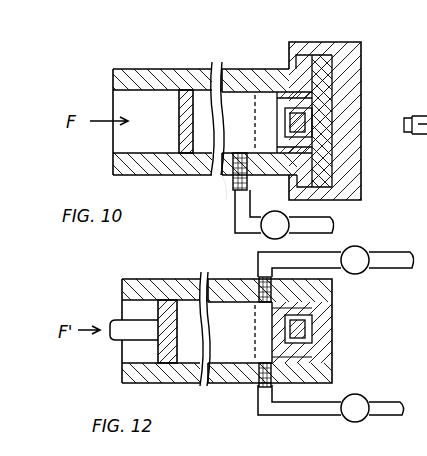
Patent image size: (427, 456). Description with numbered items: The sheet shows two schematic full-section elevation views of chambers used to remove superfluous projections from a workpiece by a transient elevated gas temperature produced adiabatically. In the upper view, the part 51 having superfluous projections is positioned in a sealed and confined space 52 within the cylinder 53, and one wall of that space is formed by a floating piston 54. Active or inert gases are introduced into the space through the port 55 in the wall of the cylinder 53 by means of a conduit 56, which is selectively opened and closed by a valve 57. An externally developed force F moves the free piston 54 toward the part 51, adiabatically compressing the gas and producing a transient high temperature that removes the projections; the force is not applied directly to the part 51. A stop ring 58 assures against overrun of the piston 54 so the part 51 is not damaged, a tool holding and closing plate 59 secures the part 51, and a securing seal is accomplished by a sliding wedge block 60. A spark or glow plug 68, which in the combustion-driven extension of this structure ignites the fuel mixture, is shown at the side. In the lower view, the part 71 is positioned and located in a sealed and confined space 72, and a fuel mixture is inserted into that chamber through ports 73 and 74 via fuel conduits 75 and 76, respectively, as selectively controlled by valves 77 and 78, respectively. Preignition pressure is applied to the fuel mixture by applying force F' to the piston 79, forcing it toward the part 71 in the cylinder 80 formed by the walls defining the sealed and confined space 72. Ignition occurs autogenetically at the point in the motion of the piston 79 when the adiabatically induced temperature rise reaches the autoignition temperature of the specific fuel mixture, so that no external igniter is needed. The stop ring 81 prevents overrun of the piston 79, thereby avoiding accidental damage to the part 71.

In FIG. 10, the part 51 is at (300, 100).
In FIG. 10, the sealed and confined space 52 is at (228, 92).
In FIG. 10, the cylinder 53 is at (207, 176).
In FIG. 10, the floating piston 54 is at (187, 92).
In FIG. 10, the port 55 is at (226, 178).
In FIG. 10, the conduit 56 is at (252, 202).
In FIG. 10, the valve 57 is at (262, 234).
In FIG. 10, the stop ring 58 is at (306, 140).
In FIG. 10, the tool holding and closing plate 59 is at (318, 60).
In FIG. 10, the sliding wedge block 60 is at (358, 184).
In FIG. 10, the spark or glow plug 68 is at (417, 140).
In FIG. 12, the part 71 is at (300, 313).
In FIG. 12, the sealed and confined space 72 is at (216, 340).
In FIG. 12, the port 73 is at (257, 289).
In FIG. 12, the port 74 is at (250, 387).
In FIG. 12, the fuel conduit 75 is at (330, 252).
In FIG. 12, the fuel conduit 76 is at (300, 413).
In FIG. 12, the valve 77 is at (363, 273).
In FIG. 12, the valve 78 is at (361, 421).
In FIG. 12, the piston 79 is at (170, 300).
In FIG. 12, the cylinder 80 is at (160, 384).
In FIG. 12, the stop ring 81 is at (306, 342).